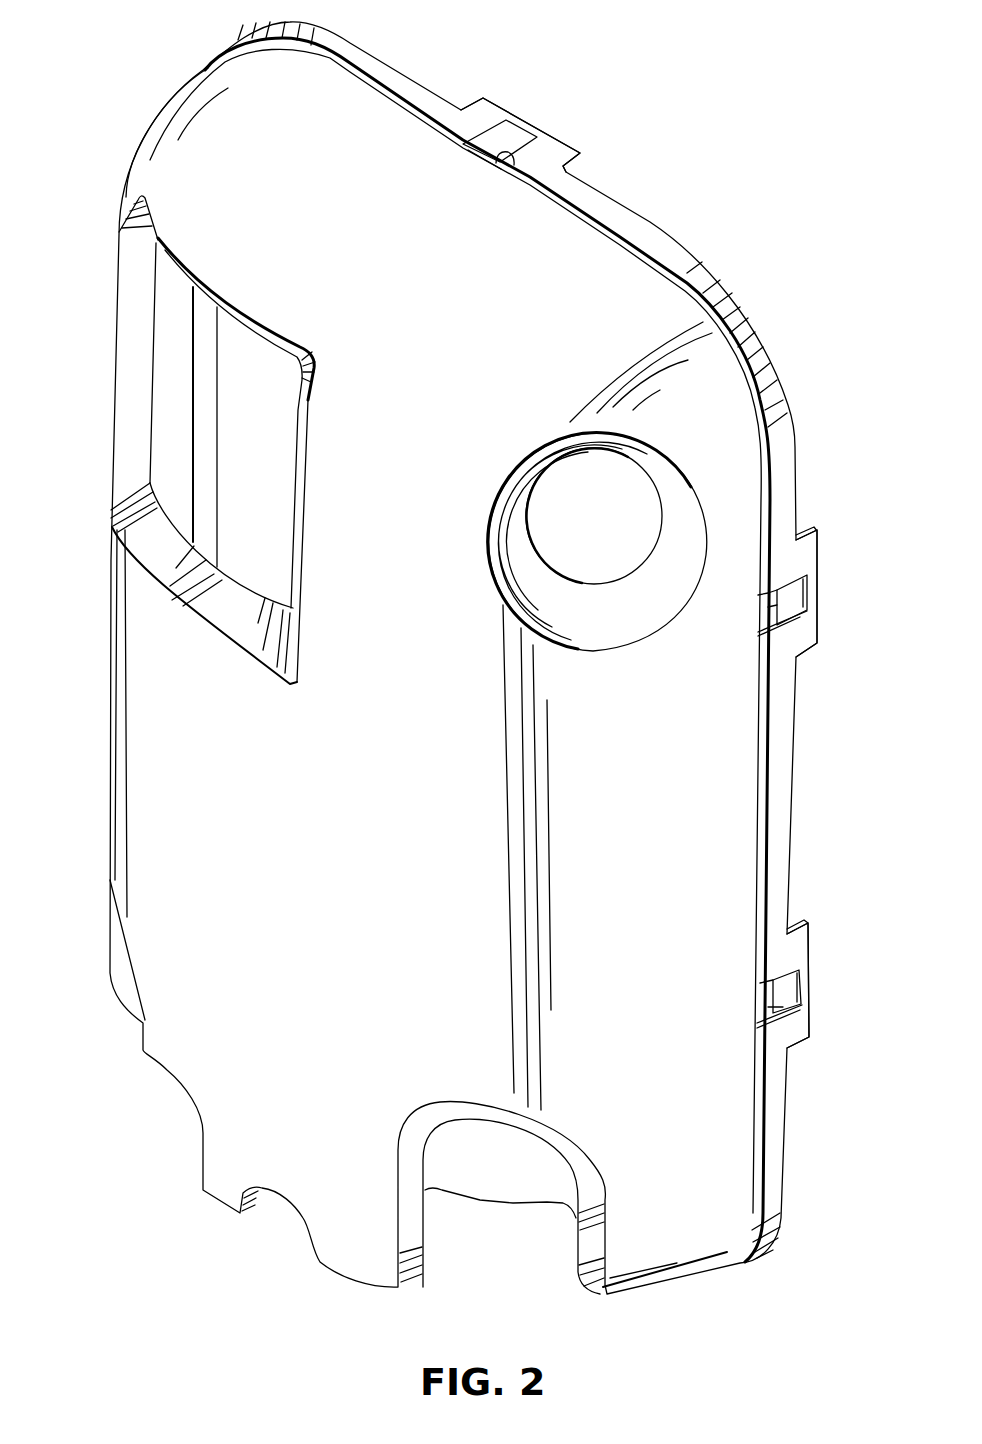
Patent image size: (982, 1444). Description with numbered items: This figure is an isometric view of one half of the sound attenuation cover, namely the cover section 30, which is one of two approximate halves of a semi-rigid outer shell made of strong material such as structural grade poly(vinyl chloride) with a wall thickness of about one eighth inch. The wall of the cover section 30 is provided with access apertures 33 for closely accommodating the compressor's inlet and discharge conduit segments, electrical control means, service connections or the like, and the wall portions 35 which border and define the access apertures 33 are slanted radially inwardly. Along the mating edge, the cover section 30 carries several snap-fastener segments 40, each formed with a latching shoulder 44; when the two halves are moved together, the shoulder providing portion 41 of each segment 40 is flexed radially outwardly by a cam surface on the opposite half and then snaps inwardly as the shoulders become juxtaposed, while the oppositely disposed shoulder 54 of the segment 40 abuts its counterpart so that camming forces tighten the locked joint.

The cover section 30 is at (430, 745).
The access aperture 33 is at (272, 428).
The wall portion bordering access aperture 35 is at (250, 325).
The snap-fastener segment 40 is at (552, 153).
The shoulder providing portion 41 is at (527, 118).
The latching shoulder 44 is at (800, 613).
The oppositely disposed shoulder 54 is at (511, 157).